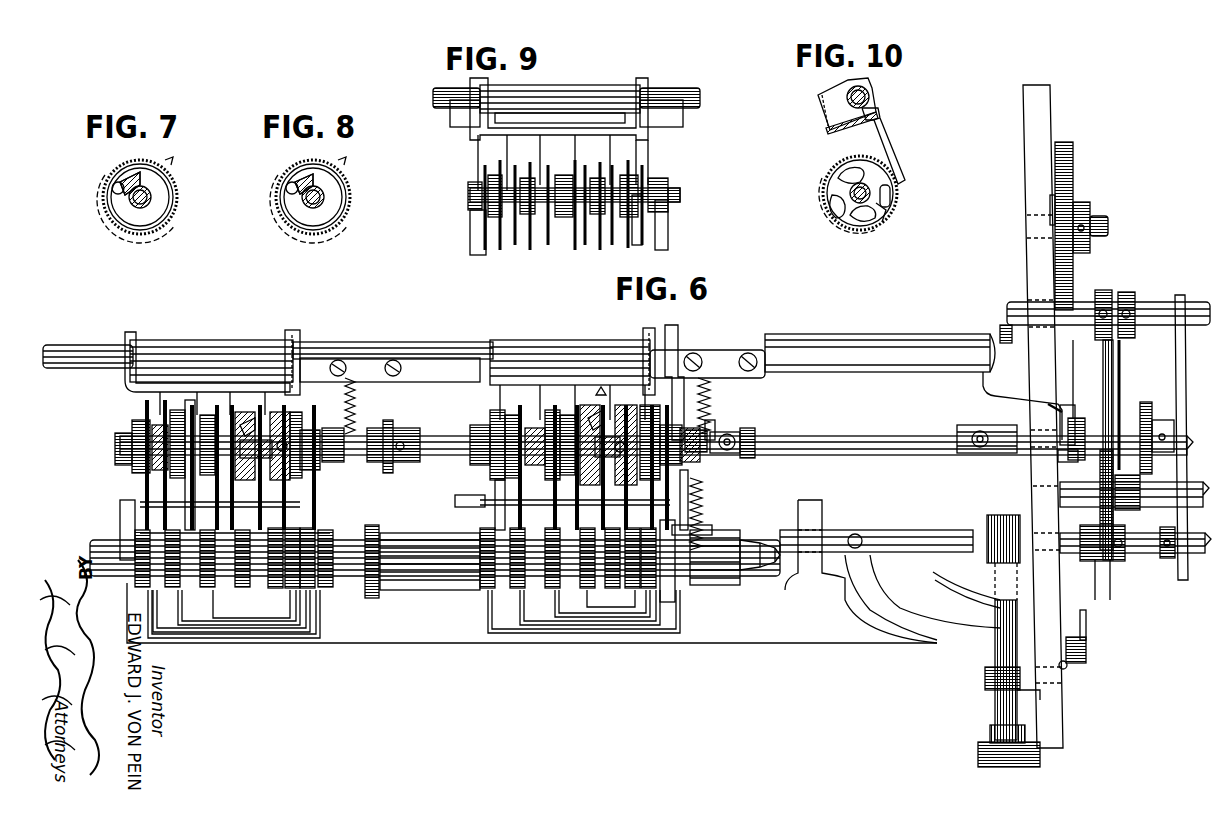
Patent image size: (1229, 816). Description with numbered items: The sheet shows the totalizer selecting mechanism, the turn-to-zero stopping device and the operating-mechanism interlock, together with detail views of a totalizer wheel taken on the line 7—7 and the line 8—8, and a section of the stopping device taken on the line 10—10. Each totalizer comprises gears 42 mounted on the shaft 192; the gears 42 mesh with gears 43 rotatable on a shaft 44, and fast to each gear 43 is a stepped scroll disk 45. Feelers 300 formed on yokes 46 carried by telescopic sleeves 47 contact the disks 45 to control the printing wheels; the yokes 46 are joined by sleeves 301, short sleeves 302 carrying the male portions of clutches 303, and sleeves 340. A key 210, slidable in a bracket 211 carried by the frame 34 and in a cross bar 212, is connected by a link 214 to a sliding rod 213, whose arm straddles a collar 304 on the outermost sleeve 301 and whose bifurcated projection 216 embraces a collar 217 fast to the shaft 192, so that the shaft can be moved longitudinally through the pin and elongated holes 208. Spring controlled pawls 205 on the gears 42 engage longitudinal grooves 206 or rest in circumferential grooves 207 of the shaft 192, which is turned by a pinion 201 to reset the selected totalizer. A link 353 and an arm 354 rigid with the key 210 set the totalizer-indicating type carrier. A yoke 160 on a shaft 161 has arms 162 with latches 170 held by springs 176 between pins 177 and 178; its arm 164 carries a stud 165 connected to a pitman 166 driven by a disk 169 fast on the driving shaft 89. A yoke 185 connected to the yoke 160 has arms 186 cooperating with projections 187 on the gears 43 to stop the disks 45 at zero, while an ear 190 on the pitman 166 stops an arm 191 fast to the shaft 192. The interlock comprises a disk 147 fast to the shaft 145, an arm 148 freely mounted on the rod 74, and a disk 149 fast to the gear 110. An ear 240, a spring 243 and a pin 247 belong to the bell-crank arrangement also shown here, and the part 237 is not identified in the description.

In FIG. 6, the line 7— 7 is at (240, 415).
In FIG. 6, the line 8— 8 is at (589, 517).
In FIG. 9, the line 10— 10 is at (595, 58).
In FIG. 6, the frame 34 is at (1053, 690).
In FIG. 7, the totalizer gears 42 is at (168, 212).
In FIG. 8, the totalizer gears 42 is at (341, 212).
In FIG. 6, the totalizer gears 42 is at (175, 415).
In FIG. 9, the gears 43 is at (630, 240).
In FIG. 10, the gears 43 is at (895, 195).
In FIG. 6, the gears 43 is at (140, 470).
In FIG. 9, the shaft 44 is at (682, 196).
In FIG. 10, the shaft 44 is at (852, 200).
In FIG. 6, the shaft 44 is at (672, 440).
In FIG. 9, the stepped scroll disk 45 is at (615, 240).
In FIG. 6, the stepped scroll disk 45 is at (130, 440).
In FIG. 6, the yokes 46 is at (312, 640).
In FIG. 6, the telescopic sleeves 47 is at (745, 572).
In FIG. 6, the rod 74 is at (1182, 580).
In FIG. 6, the driving shaft 89 is at (1085, 215).
In FIG. 6, the gear 110 is at (1118, 512).
In FIG. 6, the shaft 145 is at (1160, 305).
In FIG. 6, the disk 147 is at (1105, 295).
In FIG. 6, the arm 148 is at (1118, 565).
In FIG. 6, the disk 149 is at (1102, 482).
In FIG. 6, the yoke 160 is at (868, 368).
In FIG. 9, the shaft 161 is at (690, 75).
In FIG. 10, the shaft 161 is at (868, 100).
In FIG. 6, the shaft 161 is at (995, 335).
In FIG. 6, the arm 162 is at (325, 340).
In FIG. 6, the formed arm 164 is at (988, 392).
In FIG. 6, the stud 165 is at (1055, 414).
In FIG. 6, the pitman 166 is at (1062, 375).
In FIG. 6, the disk 169 is at (1065, 180).
In FIG. 6, the spring pressed latch 170 is at (388, 425).
In FIG. 6, the spring 176 is at (355, 398).
In FIG. 6, the pin 177 is at (345, 365).
In FIG. 6, the pin 178 is at (715, 458).
In FIG. 9, the yoke 185 is at (462, 115).
In FIG. 10, the yoke 185 is at (818, 100).
In FIG. 6, the yoke 185 is at (460, 348).
In FIG. 9, the arms 186 is at (505, 143).
In FIG. 10, the arms 186 is at (890, 150).
In FIG. 6, the arms 186 is at (135, 392).
In FIG. 9, the projections 187 is at (660, 215).
In FIG. 10, the projections 187 is at (882, 222).
In FIG. 6, the ear 190 is at (1078, 418).
In FIG. 6, the arm 191 is at (1060, 458).
In FIG. 6, the shaft 192 is at (455, 448).
In FIG. 6, the pinion 201 is at (1146, 405).
In FIG. 7, the spring controlled pawls 205 is at (118, 186).
In FIG. 8, the spring controlled pawls 205 is at (292, 185).
In FIG. 6, the spring controlled pawls 205 is at (250, 420).
In FIG. 8, the longitudinally extending grooves 206 is at (313, 186).
In FIG. 6, the longitudinally extending grooves 206 is at (280, 455).
In FIG. 7, the circumferentially extending grooves 207 is at (135, 205).
In FIG. 6, the circumferentially extending grooves 207 is at (290, 470).
In FIG. 6, the pin and elongated holes 208 is at (988, 453).
In FIG. 6, the key 210 is at (1000, 730).
In FIG. 6, the bracket 211 is at (990, 683).
In FIG. 6, the cross bar 212 is at (808, 640).
In FIG. 6, the sliding rod 213 is at (935, 530).
In FIG. 6, the link 214 is at (958, 630).
In FIG. 6, the bifurcated projection 216 is at (385, 545).
In FIG. 6, the collar 217 is at (398, 428).
In FIG. 6, the collar 237 is at (335, 440).
In FIG. 6, the ear 240 is at (705, 528).
In FIG. 6, the spring 243 is at (702, 492).
In FIG. 6, the pin 247 is at (702, 512).
In FIG. 6, the feelers 300 is at (130, 510).
In FIG. 6, the sleeves 301 is at (440, 582).
In FIG. 6, the short sleeves 302 is at (672, 603).
In FIG. 6, the clutches 303 is at (705, 585).
In FIG. 6, the collar 304 is at (372, 600).
In FIG. 6, the sleeves 340 is at (240, 592).
In FIG. 6, the link 353 is at (1086, 625).
In FIG. 6, the arm 354 is at (1086, 640).